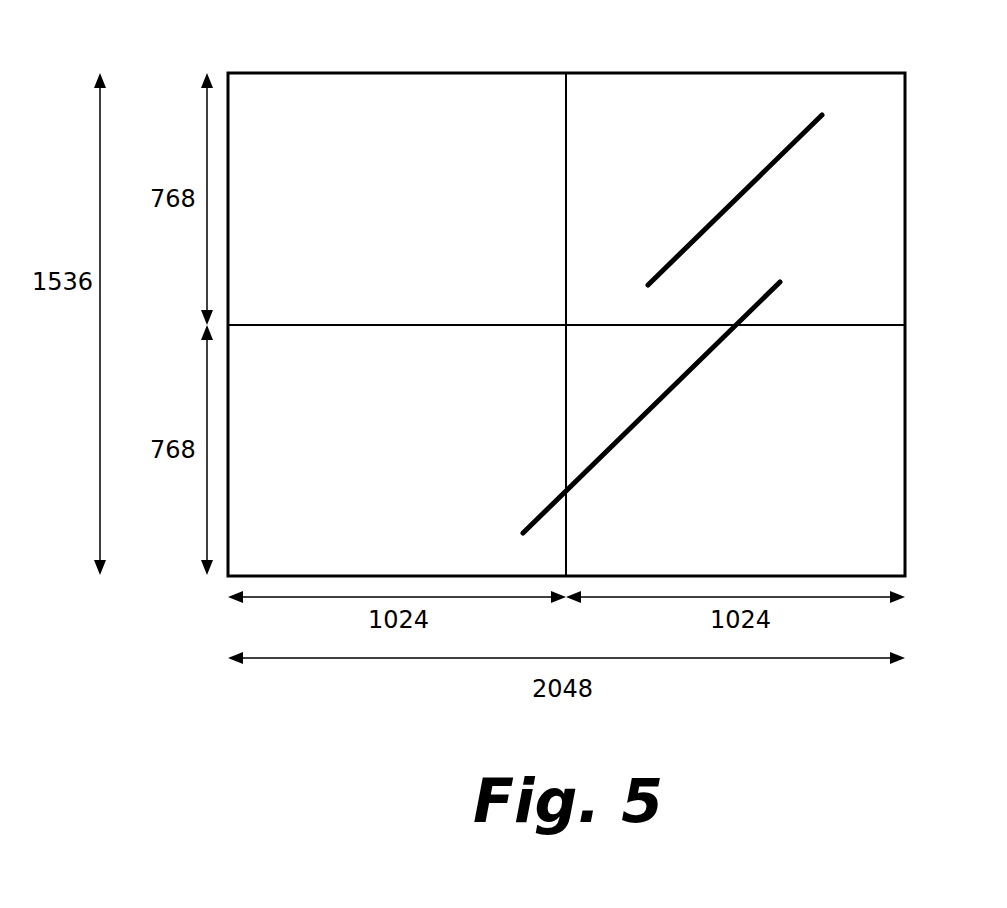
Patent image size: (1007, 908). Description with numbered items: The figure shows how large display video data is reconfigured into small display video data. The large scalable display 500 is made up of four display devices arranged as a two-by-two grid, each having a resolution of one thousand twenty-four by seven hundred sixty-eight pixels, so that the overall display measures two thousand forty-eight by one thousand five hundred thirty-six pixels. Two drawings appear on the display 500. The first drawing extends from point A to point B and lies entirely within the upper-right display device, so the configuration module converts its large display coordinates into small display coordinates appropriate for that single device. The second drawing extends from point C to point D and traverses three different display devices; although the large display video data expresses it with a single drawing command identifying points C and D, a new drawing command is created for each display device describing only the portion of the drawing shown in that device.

The large scalable display 500 is at (735, 73).
The point A is at (628, 280).
The point B is at (842, 120).
The point C is at (504, 530).
The point D is at (800, 289).